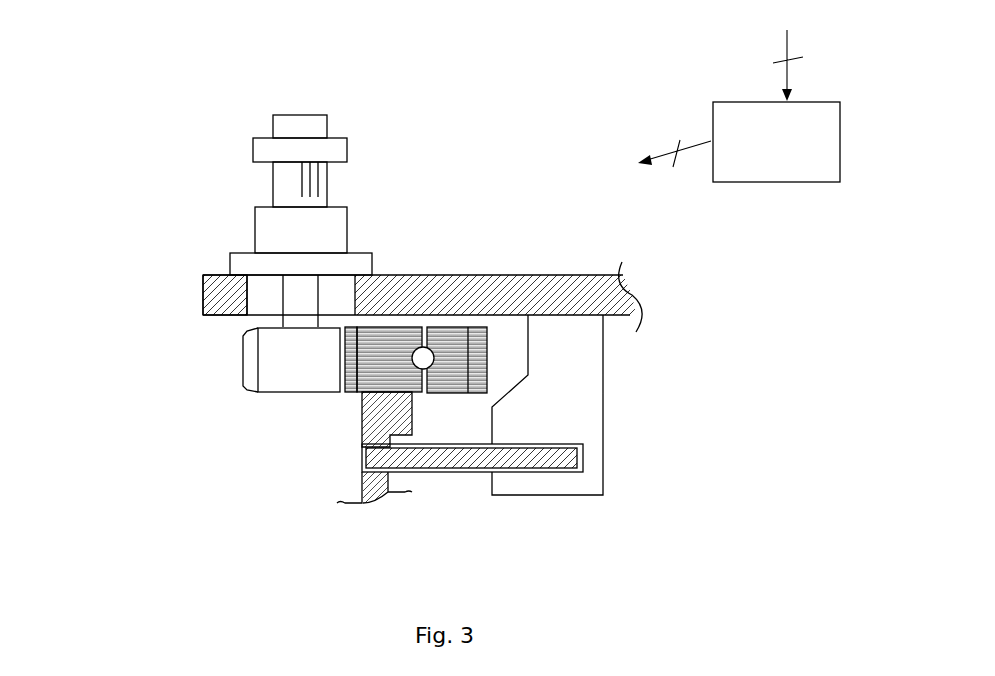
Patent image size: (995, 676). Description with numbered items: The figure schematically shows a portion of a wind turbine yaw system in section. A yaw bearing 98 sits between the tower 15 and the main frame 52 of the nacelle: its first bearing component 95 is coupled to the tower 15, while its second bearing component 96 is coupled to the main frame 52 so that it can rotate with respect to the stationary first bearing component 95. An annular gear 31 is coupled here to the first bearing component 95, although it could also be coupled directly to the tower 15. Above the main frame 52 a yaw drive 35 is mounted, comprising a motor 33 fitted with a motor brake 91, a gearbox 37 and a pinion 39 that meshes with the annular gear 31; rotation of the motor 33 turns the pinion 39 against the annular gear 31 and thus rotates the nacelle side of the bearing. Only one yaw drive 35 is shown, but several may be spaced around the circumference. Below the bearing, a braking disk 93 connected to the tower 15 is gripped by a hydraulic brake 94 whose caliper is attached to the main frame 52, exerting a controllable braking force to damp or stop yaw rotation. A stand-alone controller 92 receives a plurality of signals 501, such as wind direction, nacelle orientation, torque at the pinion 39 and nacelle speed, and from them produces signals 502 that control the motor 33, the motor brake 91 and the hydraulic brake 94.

The tower 15 is at (363, 485).
The annular gear 31 is at (350, 393).
The motor 33 is at (287, 180).
The yaw drive 35 is at (145, 202).
The gearbox 37 is at (273, 237).
The pinion 39 is at (283, 370).
The main frame 52 is at (548, 292).
The motor brake 91 is at (263, 135).
The controller 92 is at (776, 142).
The braking disk 93 is at (483, 462).
The hydraulic brake 94 is at (580, 402).
The first bearing component 95 is at (380, 323).
The second bearing component 96 is at (457, 322).
The yaw bearing 98 is at (436, 306).
The signals 501 is at (787, 51).
The signals 502 is at (664, 144).